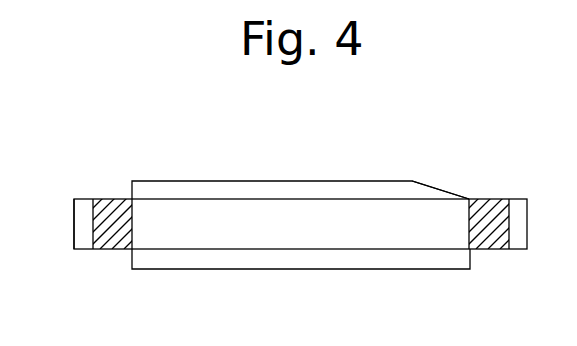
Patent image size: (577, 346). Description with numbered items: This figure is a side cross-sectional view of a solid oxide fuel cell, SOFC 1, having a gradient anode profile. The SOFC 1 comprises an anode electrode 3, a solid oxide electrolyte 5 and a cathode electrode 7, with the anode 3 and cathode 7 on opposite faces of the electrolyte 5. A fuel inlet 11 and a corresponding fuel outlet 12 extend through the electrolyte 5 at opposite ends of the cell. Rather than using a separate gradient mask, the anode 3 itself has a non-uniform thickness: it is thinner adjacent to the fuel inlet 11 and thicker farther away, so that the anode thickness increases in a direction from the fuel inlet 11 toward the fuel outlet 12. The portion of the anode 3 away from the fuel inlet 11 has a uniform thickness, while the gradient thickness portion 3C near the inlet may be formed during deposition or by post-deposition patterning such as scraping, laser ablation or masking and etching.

The SOFC 1 is at (314, 148).
The anode electrode 3 is at (131, 181).
The gradient thickness portion 3C is at (448, 199).
The solid oxide electrolyte 5 is at (74, 230).
The cathode electrode 7 is at (302, 258).
The fuel inlet 11 is at (493, 243).
The fuel outlet 12 is at (107, 248).